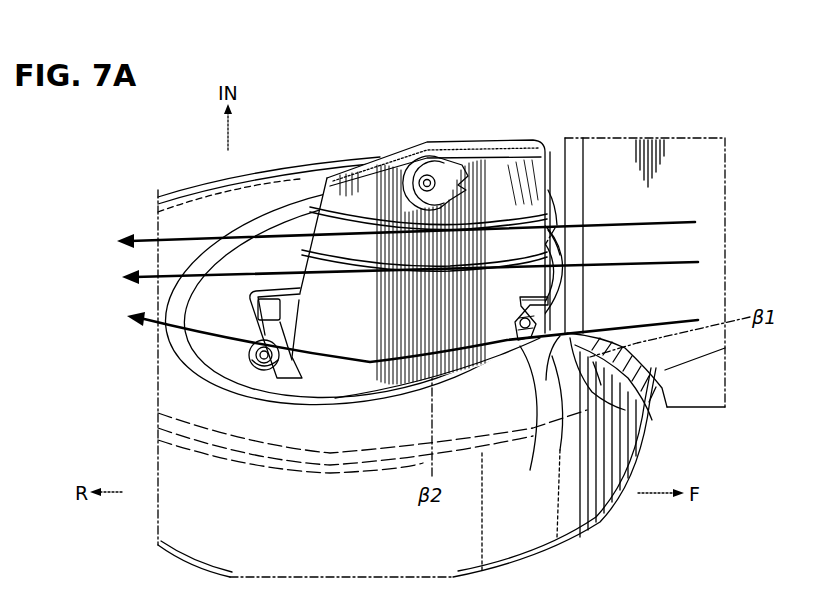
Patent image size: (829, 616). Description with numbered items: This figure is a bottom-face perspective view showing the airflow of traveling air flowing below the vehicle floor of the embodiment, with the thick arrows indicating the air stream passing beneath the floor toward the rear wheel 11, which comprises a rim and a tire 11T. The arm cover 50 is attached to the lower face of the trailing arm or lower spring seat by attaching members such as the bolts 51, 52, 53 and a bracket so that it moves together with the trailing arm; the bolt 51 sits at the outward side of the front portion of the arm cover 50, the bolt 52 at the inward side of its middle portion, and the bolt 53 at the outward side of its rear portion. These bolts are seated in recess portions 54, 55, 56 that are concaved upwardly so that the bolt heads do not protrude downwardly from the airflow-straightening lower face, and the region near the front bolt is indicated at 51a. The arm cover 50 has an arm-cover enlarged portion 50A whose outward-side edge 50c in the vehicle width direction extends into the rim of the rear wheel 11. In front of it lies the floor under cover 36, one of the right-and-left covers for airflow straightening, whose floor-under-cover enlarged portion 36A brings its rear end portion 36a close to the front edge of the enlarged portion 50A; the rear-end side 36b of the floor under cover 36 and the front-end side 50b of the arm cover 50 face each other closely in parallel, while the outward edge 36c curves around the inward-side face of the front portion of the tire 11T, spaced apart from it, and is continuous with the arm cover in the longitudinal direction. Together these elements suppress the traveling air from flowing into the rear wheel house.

The rear wheel 11 is at (598, 532).
The tire 11T is at (524, 549).
The floor under cover 36 is at (646, 132).
The floor-under-cover enlarged portion 36A is at (603, 328).
The rear end portion 36a is at (587, 385).
The rear-end side 36b is at (560, 190).
The outward edge 36c is at (651, 404).
The arm cover 50 is at (388, 145).
The arm-cover enlarged portion 50A is at (323, 384).
The front-end side 50b is at (553, 241).
The outward-side edge 50c is at (480, 363).
The bolt 51 is at (526, 422).
The guide rib end 51a is at (556, 424).
The bolt 52 is at (432, 175).
The bolt 53 is at (262, 371).
The recess portion 54 is at (528, 342).
The recess portion 55 is at (417, 163).
The recess portion 56 is at (273, 371).